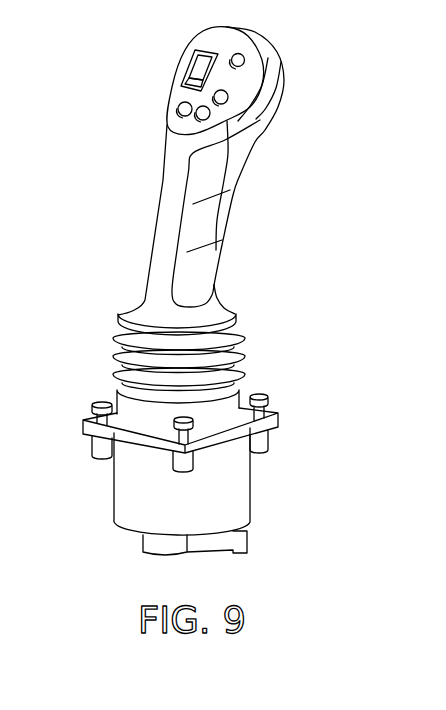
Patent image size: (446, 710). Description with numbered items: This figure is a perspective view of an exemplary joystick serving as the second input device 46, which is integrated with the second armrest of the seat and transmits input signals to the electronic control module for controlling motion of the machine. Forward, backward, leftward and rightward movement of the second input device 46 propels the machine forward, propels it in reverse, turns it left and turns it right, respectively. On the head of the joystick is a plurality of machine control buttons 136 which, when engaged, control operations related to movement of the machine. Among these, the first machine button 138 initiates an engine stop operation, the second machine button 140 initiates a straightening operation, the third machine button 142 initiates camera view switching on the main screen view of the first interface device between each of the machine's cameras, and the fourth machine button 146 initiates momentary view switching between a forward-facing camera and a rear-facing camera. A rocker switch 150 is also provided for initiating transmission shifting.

The plurality of machine control buttons 136 is at (200, 291).
The second input device 46 is at (162, 230).
The rocker switch 150 is at (193, 74).
The first machine button 138 is at (241, 56).
The second machine button 140 is at (224, 99).
The third machine button 142 is at (206, 117).
The fourth machine button 146 is at (183, 108).